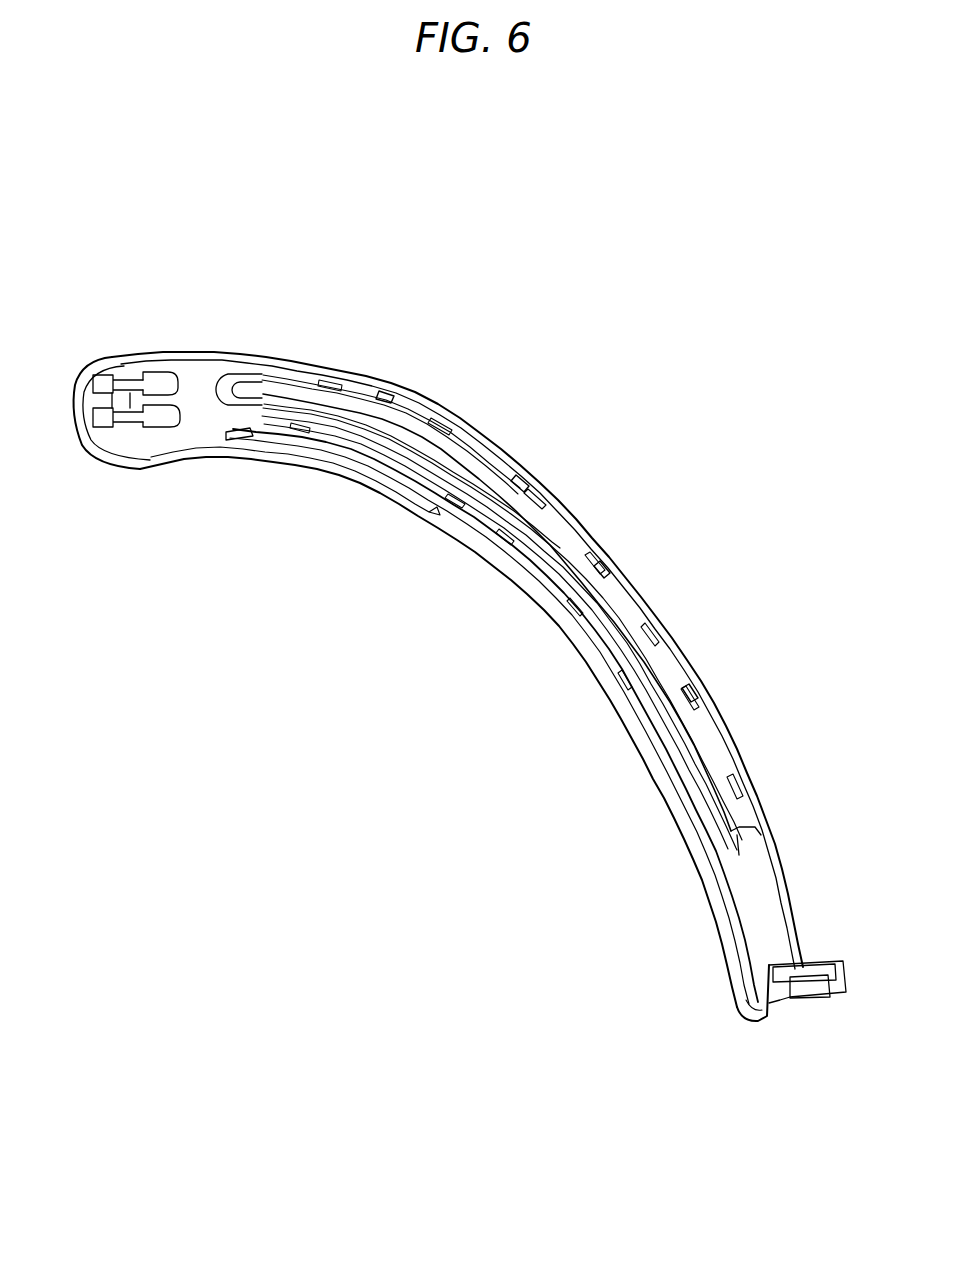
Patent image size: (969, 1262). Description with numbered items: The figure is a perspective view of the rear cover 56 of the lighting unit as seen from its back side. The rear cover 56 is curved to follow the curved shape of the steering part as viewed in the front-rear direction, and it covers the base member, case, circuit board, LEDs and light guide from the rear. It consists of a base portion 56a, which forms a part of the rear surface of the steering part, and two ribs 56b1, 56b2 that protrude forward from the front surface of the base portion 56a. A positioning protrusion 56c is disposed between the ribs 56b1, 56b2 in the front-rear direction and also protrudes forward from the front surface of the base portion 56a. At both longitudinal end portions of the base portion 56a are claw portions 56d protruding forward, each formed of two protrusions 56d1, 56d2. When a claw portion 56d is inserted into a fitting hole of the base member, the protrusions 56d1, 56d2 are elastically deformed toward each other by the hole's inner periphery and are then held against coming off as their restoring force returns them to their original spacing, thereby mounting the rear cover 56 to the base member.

The rear cover 56 is at (422, 380).
The base portion 56a is at (193, 372).
The rib 56b1 is at (603, 573).
The rib 56b2 is at (473, 515).
The positioning protrusion 56c is at (646, 683).
The claw portion 56d is at (112, 372).
The protrusion 56d1 is at (148, 422).
The protrusion 56d2 is at (162, 372).